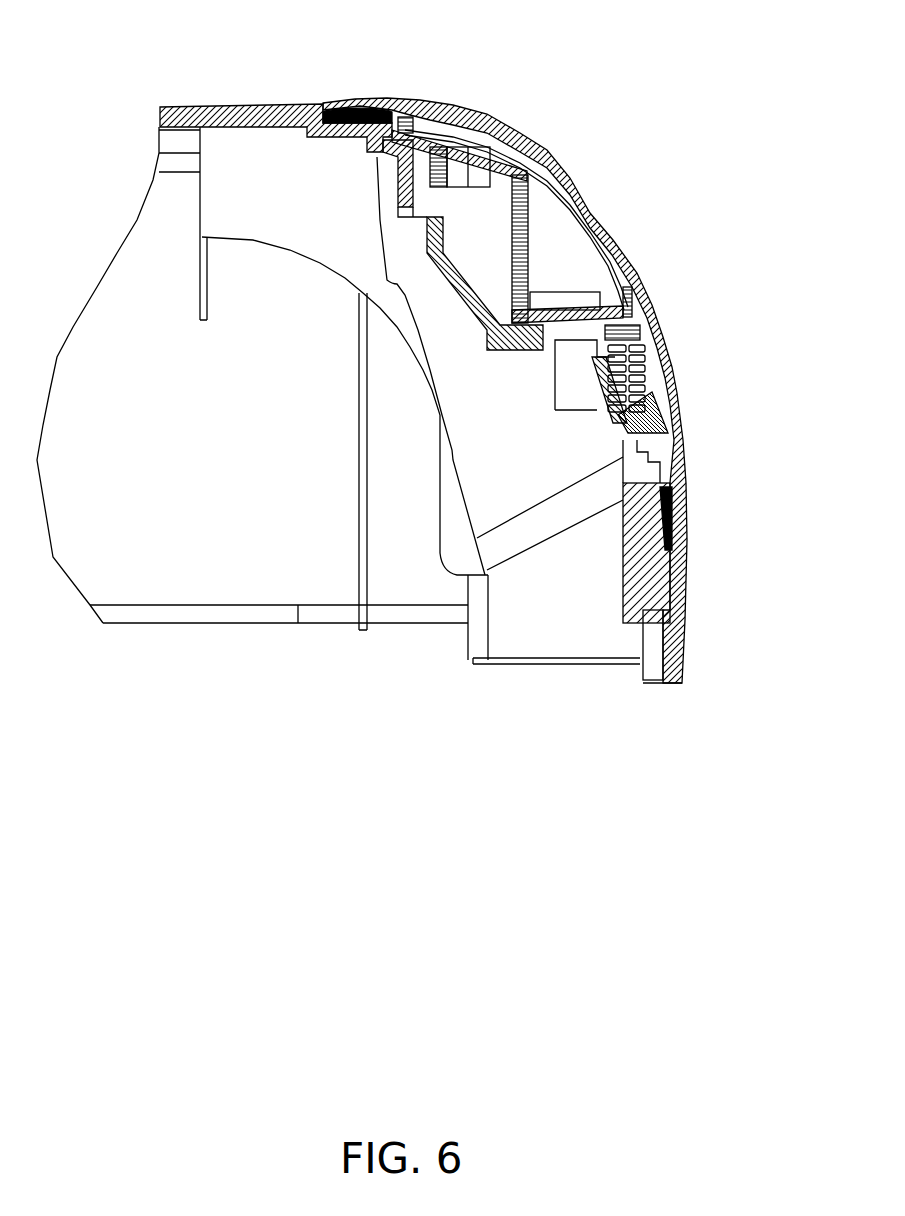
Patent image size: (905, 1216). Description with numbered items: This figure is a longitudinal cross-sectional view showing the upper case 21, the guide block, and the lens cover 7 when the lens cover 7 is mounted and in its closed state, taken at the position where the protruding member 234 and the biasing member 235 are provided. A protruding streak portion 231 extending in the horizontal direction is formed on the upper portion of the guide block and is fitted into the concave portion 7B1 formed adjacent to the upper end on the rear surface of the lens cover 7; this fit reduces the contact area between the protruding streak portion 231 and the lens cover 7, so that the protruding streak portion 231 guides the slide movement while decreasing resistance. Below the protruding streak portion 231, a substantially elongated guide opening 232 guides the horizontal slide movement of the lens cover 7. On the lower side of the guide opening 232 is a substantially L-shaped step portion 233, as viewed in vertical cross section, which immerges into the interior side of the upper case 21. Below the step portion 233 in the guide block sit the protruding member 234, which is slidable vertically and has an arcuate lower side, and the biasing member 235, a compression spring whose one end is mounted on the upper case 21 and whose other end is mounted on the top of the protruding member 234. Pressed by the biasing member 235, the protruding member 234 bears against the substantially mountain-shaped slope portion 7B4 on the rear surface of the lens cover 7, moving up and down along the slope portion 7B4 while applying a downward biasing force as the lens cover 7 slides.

The upper case 21 is at (241, 105).
The concave portion 7B1 is at (407, 107).
The lens cover 7 is at (663, 330).
The protruding streak portion 231 is at (367, 152).
The guide opening 232 is at (490, 172).
The step portion 233 is at (563, 293).
The biasing member 235 is at (663, 376).
The protruding member 234 is at (663, 412).
The slope portion 7B4 is at (677, 507).